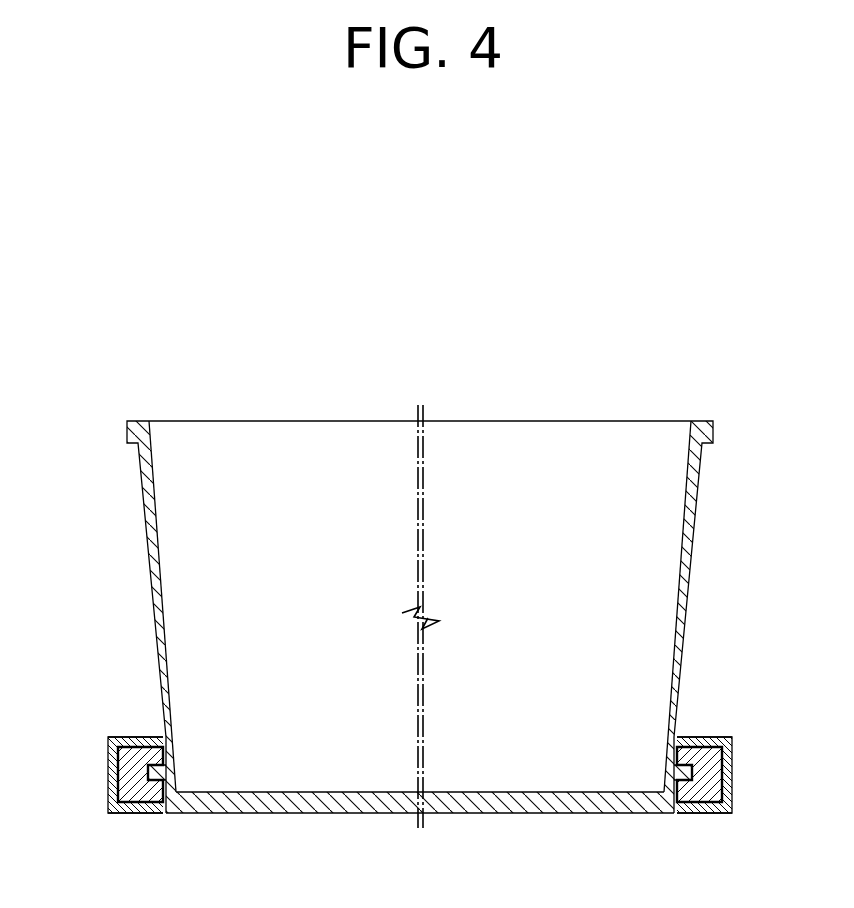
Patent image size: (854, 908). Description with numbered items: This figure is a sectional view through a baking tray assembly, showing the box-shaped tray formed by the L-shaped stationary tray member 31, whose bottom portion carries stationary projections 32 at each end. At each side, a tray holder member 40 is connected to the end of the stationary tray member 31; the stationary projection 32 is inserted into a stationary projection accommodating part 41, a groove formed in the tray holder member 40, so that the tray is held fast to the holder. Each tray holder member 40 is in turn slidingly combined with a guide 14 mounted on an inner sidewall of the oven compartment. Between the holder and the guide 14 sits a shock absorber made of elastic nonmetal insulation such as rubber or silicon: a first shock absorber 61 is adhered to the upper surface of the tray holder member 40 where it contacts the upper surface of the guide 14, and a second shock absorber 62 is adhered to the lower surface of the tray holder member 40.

The guide 14 is at (120, 813).
The stationary tray member 31 is at (697, 520).
The stationary projection 32 is at (168, 813).
The tray holder member 40 is at (118, 782).
The stationary projection accommodating part 41 is at (135, 737).
The first shock absorber 61 is at (108, 745).
The second shock absorber 62 is at (148, 813).